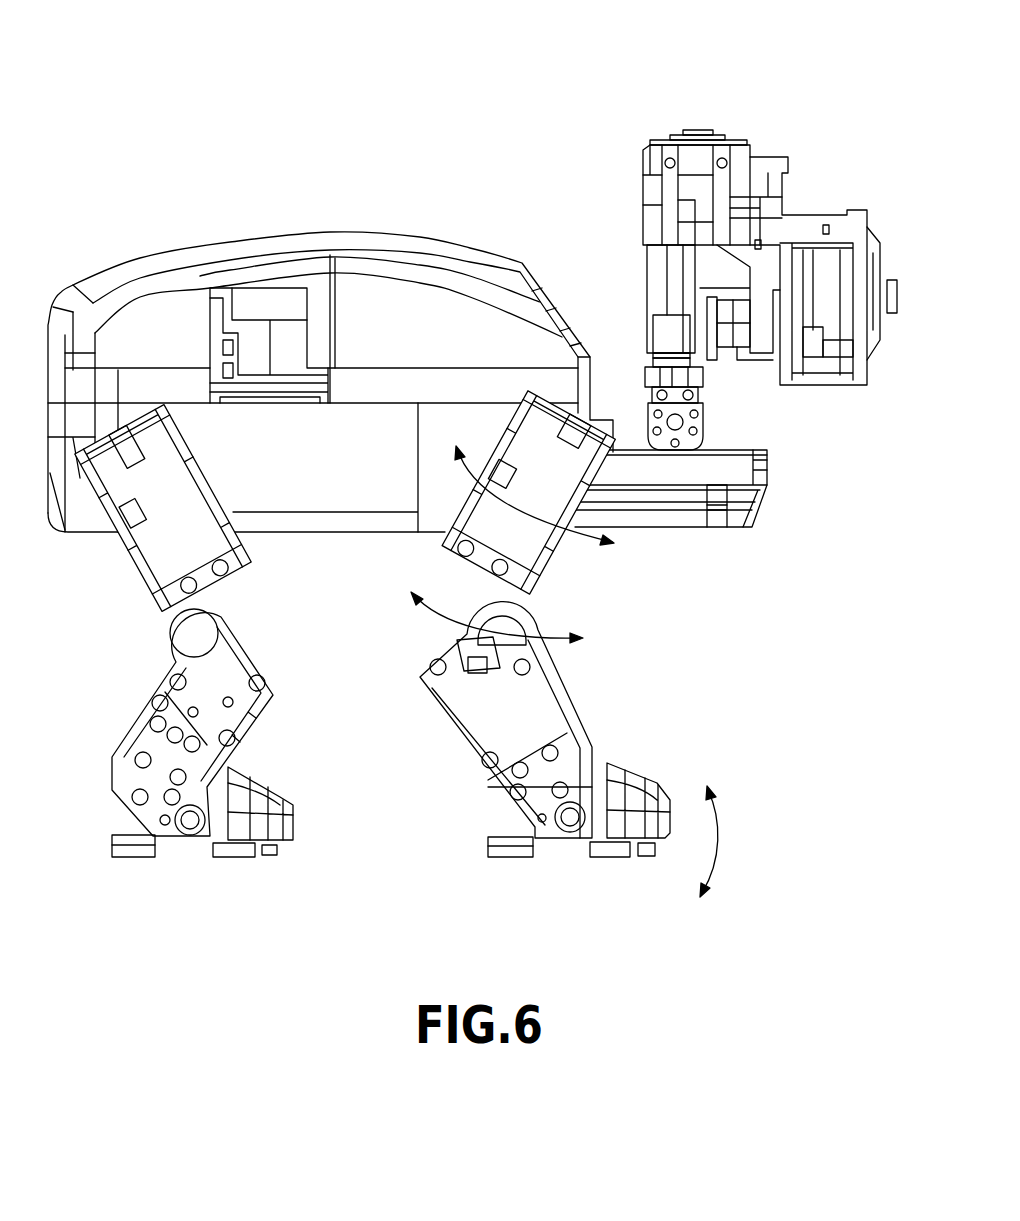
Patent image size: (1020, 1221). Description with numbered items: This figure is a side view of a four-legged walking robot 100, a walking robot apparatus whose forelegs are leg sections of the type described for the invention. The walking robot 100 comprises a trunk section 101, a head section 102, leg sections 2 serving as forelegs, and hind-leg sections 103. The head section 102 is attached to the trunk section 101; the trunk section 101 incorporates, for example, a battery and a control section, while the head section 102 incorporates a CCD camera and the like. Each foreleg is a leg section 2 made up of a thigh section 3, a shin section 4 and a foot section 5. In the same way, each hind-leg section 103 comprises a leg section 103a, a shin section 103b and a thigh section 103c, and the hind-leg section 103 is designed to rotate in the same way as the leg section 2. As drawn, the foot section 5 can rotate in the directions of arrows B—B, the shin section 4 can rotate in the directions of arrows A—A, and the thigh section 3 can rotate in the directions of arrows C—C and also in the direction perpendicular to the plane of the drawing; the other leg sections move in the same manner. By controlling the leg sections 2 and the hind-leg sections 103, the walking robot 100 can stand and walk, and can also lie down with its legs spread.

The four-legged walking robot 100 is at (472, 465).
The trunk section 101 is at (412, 248).
The head section 102 is at (800, 132).
The hind-leg section 103 is at (228, 631).
The leg section 103a is at (272, 781).
The shin section 103b is at (243, 697).
The thigh section 103c is at (257, 548).
The leg section 2 is at (559, 624).
The thigh section 3 is at (547, 556).
The shin section 4 is at (559, 715).
The foot section 5 is at (638, 772).